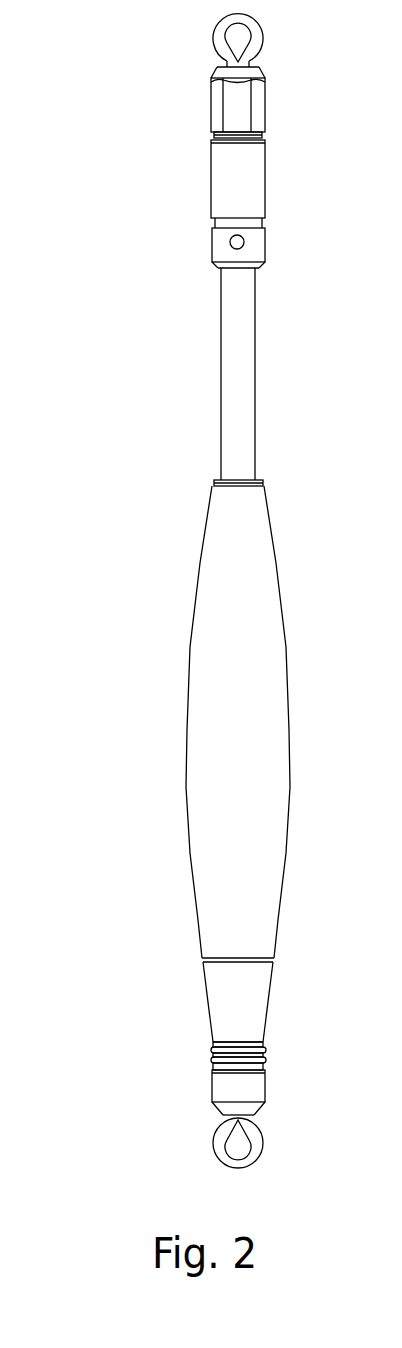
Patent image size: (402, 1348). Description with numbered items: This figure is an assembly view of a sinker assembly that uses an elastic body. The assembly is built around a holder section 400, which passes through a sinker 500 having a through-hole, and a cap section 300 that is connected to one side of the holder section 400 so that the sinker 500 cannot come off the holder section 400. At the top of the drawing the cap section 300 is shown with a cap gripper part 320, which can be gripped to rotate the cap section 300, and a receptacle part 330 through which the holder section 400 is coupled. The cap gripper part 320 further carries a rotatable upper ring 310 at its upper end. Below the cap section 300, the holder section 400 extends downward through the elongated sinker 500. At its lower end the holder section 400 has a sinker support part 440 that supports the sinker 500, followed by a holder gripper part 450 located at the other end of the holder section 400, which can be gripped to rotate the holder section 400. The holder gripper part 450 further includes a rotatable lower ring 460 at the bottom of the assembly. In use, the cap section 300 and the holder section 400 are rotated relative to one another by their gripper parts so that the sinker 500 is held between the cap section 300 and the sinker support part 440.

The cap section 300 is at (152, 190).
The upper ring 310 is at (259, 39).
The cap gripper part 320 is at (242, 105).
The receptacle part 330 is at (240, 187).
The holder section 400 is at (152, 377).
The sinker support part 440 is at (245, 1000).
The holder gripper part 450 is at (262, 1083).
The lower ring 460 is at (250, 1162).
The sinker 500 is at (152, 773).